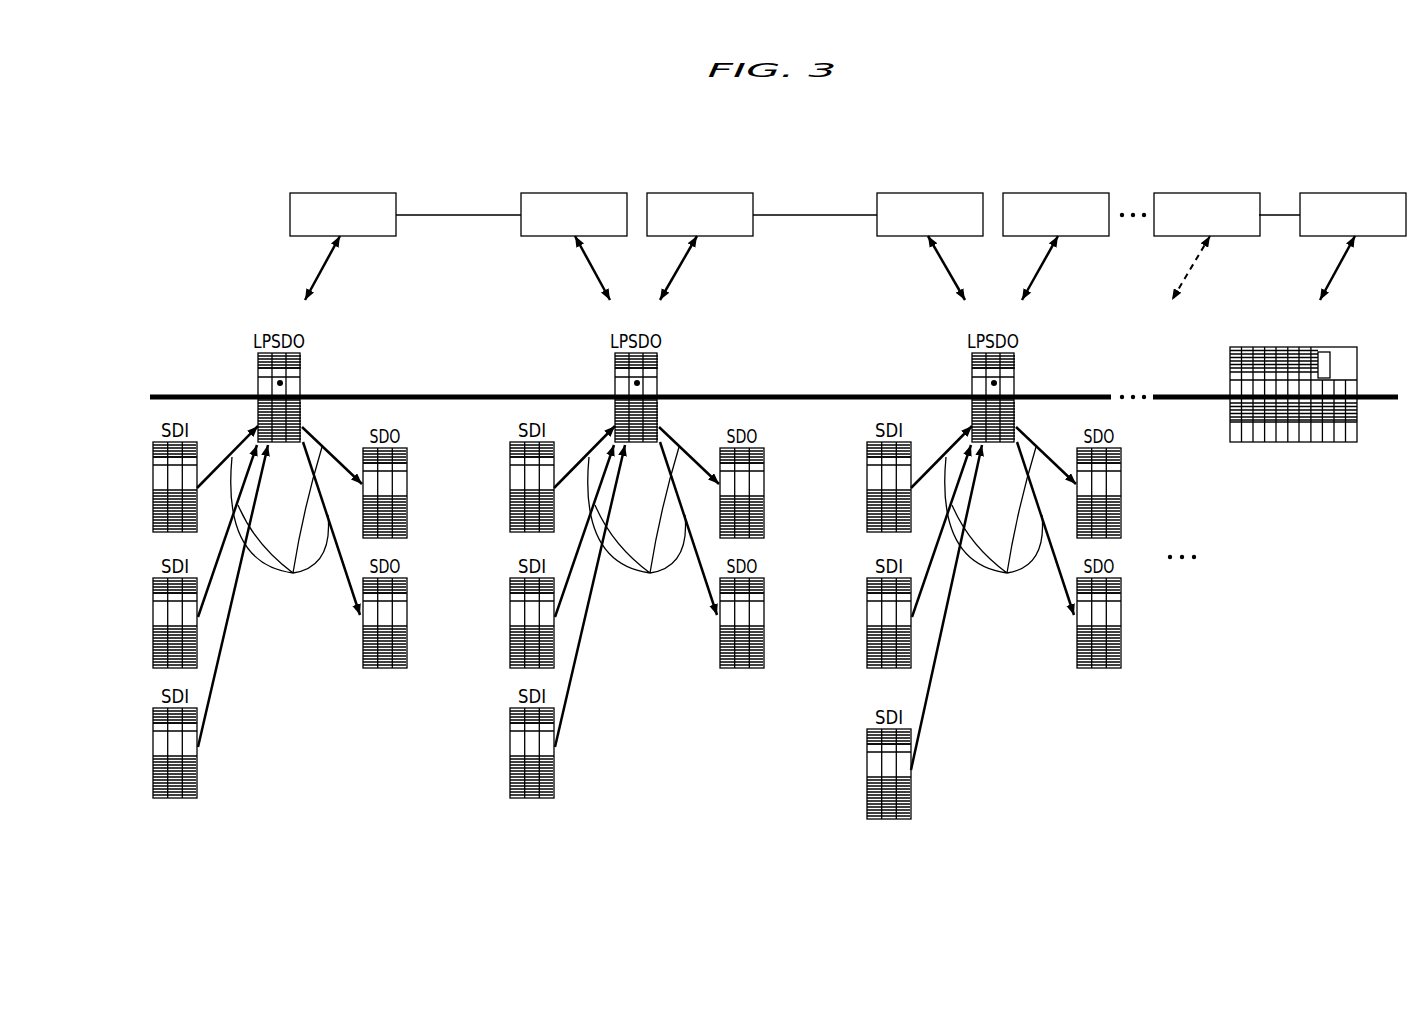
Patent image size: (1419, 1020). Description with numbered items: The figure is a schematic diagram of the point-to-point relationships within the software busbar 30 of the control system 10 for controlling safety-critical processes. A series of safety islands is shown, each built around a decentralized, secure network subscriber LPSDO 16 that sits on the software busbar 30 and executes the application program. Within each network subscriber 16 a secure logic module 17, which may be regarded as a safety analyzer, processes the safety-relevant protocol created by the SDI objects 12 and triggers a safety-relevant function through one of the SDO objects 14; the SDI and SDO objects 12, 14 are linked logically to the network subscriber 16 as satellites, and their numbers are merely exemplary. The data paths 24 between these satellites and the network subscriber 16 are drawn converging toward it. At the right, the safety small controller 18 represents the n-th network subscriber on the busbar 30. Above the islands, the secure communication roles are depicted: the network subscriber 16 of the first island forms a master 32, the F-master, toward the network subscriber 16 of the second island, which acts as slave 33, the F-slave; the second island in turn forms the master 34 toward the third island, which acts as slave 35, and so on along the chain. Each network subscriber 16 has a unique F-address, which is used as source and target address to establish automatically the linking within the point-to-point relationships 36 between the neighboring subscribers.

The control system 10 is at (1070, 129).
The SDI object 12 is at (511, 618).
The SDO object 14 is at (763, 546).
The decentralized, secure network subscriber LPSDO 16 is at (657, 385).
The secure logic module 17 is at (600, 372).
The safety small controller 18 is at (1357, 372).
The data paths 24 is at (637, 527).
The software busbar 30 is at (1094, 394).
The master 32 is at (365, 193).
The slave 33 is at (555, 193).
The master 34 is at (722, 193).
The slave 35 is at (910, 193).
The point-to-point relationship 36 is at (463, 212).